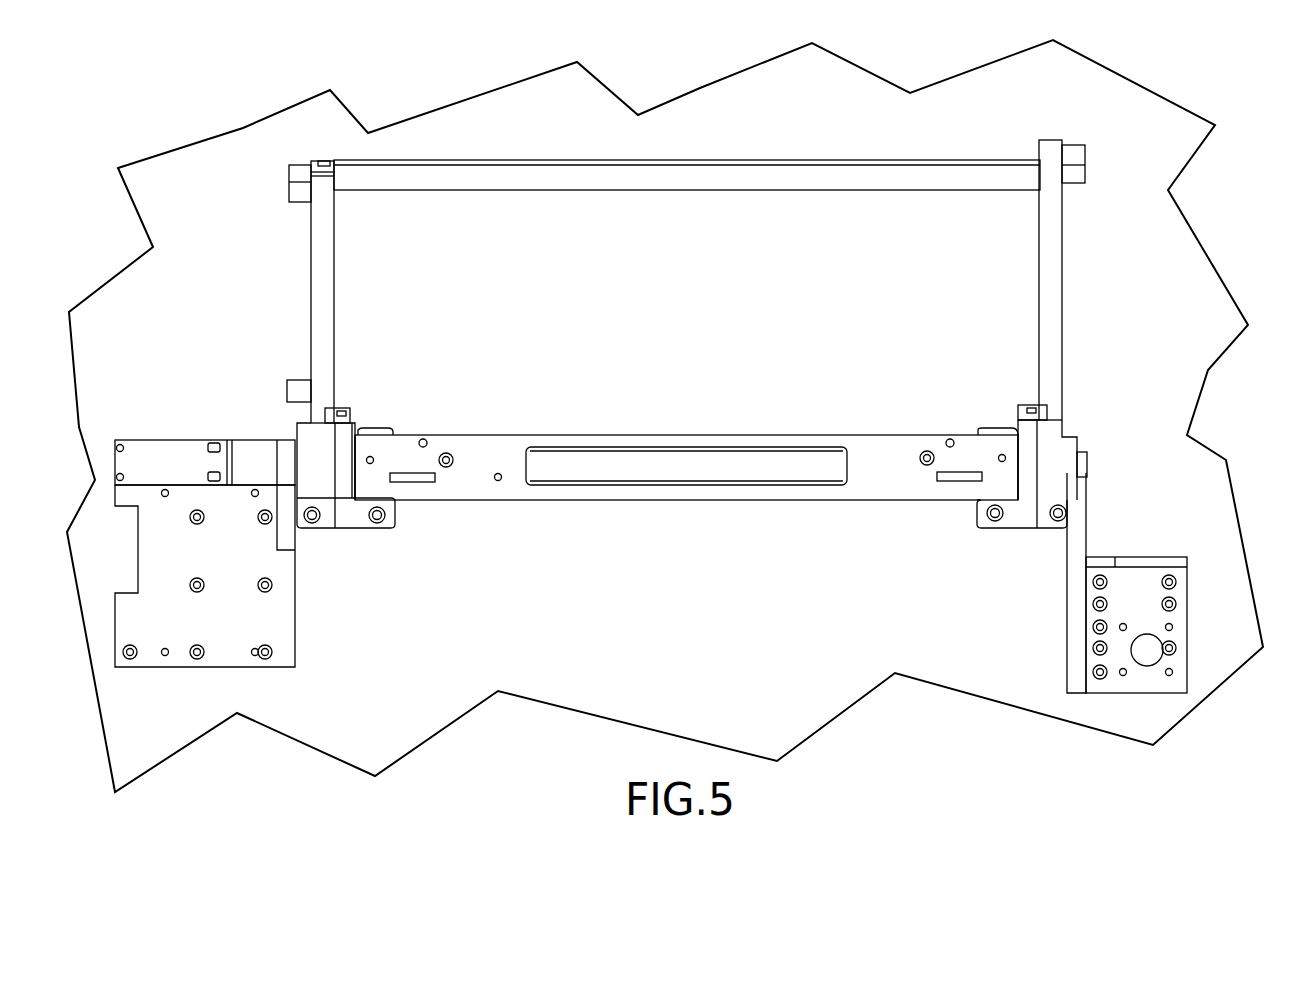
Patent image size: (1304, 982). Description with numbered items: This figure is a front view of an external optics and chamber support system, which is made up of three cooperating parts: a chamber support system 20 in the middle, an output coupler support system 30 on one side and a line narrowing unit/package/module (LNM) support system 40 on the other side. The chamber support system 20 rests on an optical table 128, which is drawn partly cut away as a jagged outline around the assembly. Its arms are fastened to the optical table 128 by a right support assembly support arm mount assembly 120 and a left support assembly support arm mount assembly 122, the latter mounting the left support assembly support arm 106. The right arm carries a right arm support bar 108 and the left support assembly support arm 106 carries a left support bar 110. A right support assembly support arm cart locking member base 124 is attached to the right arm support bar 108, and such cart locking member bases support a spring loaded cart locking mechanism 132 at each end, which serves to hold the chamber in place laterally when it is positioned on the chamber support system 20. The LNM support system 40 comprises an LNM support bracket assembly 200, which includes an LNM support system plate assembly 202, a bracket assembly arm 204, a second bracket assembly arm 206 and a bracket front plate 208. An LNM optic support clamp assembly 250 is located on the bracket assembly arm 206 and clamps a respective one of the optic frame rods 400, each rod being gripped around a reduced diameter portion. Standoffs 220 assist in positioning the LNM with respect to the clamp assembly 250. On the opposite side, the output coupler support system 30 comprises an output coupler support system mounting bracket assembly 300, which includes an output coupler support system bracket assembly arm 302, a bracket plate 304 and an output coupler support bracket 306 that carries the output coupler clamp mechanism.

The chamber support system 20 is at (620, 540).
The output coupler support system 30 is at (1106, 590).
The line narrowing unit/package/module (LNM) support system 40 is at (183, 342).
The left support assembly support arm 106 is at (303, 450).
The right arm support bar 108 is at (1020, 528).
The left support bar 110 is at (348, 523).
The right support assembly support arm mount assembly 120 is at (985, 428).
The left support assembly support arm mount assembly 122 is at (387, 423).
The right support assembly support arm cart locking member base 124 is at (1065, 440).
The optical table 128 is at (805, 705).
The spring loaded cart locking mechanism 132 is at (336, 408).
The LNM support bracket assembly 200 is at (240, 510).
The LNM support system plate assembly 202 is at (290, 628).
The bracket assembly arm 204 is at (150, 447).
The bracket assembly arm 206 is at (290, 538).
The bracket front plate 208 is at (250, 447).
The standoff 220 is at (290, 203).
The LNM optic support clamp assembly 250 is at (326, 297).
The output coupler support system mounting bracket assembly 300 is at (1045, 262).
The output coupler support system bracket assembly arm 302 is at (1072, 625).
The bracket plate 304 is at (1178, 633).
The output coupler support bracket 306 is at (1165, 560).
The optic frame rod 400 is at (472, 182).